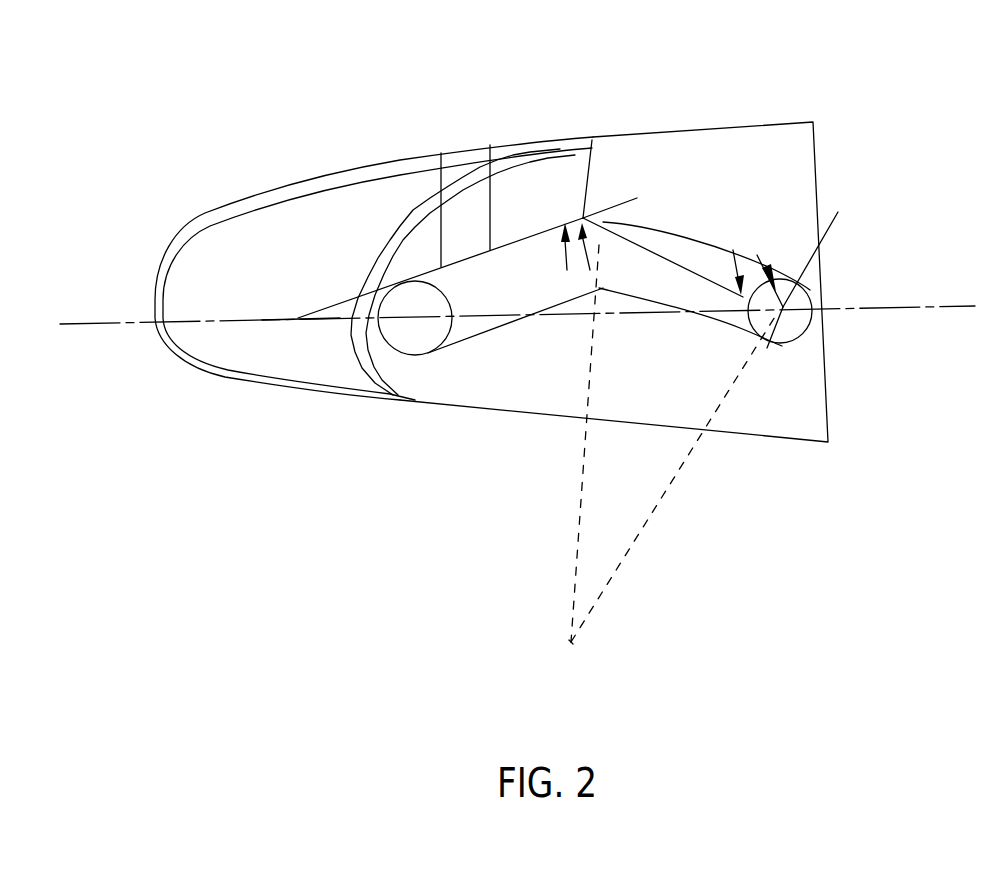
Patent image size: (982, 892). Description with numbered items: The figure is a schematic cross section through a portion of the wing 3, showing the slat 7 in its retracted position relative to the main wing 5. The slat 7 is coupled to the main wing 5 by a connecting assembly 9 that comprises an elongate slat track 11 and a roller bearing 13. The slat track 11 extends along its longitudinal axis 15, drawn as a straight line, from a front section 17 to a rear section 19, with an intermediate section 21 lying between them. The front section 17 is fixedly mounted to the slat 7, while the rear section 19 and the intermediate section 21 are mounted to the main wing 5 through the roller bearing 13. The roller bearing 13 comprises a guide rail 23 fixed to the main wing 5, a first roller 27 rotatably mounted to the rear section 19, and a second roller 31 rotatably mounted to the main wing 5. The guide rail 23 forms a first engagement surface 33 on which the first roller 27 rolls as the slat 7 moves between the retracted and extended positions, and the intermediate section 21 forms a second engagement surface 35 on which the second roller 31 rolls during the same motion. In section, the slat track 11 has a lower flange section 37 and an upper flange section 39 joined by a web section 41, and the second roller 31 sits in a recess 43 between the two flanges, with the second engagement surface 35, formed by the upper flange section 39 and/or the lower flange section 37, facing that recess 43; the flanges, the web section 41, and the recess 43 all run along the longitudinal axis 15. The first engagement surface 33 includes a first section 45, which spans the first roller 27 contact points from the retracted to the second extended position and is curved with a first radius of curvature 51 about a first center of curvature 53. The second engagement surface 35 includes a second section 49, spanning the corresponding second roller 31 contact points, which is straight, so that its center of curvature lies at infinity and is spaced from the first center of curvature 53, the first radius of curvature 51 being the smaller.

The wing 3 is at (690, 92).
The main wing 5 is at (740, 155).
The slat 7 is at (237, 250).
The connecting assembly 9 is at (890, 279).
The slat track 11 is at (490, 145).
The roller bearing 13 is at (868, 227).
The longitudinal axis 15 is at (84, 322).
The front section 17 is at (263, 320).
The rear section 19 is at (767, 347).
The intermediate section 21 is at (441, 153).
The guide rail 23 is at (677, 230).
The first roller 27 is at (807, 340).
The second roller 31 is at (452, 308).
The first engagement surface 33 is at (741, 297).
The second engagement surface 35 is at (563, 273).
The lower flange section 37 is at (511, 324).
The upper flange section 39 is at (508, 255).
The web section 41 is at (567, 270).
The recess 43 is at (288, 366).
The first section 45 is at (838, 212).
The second section 49 is at (598, 443).
The first radius of curvature 51 is at (578, 509).
The first center of curvature 53 is at (571, 645).